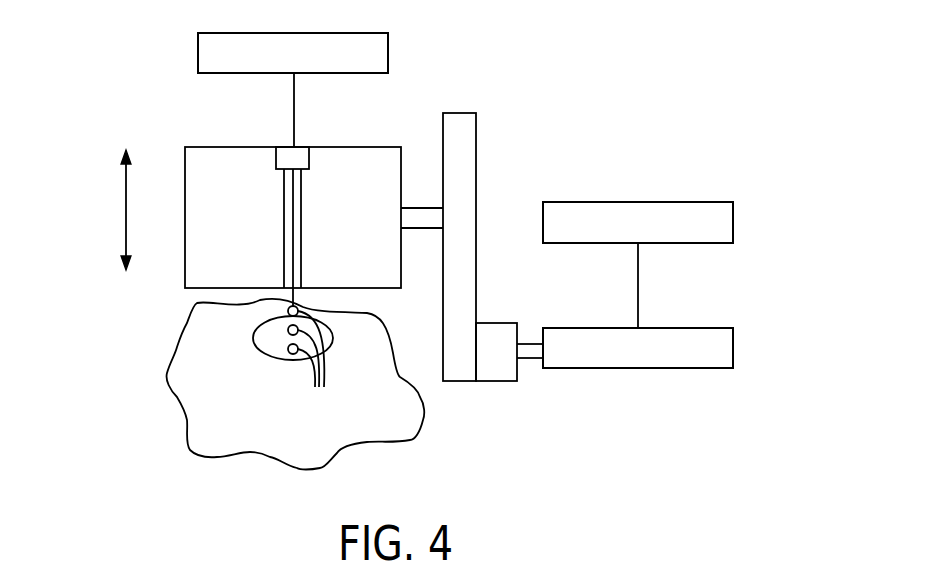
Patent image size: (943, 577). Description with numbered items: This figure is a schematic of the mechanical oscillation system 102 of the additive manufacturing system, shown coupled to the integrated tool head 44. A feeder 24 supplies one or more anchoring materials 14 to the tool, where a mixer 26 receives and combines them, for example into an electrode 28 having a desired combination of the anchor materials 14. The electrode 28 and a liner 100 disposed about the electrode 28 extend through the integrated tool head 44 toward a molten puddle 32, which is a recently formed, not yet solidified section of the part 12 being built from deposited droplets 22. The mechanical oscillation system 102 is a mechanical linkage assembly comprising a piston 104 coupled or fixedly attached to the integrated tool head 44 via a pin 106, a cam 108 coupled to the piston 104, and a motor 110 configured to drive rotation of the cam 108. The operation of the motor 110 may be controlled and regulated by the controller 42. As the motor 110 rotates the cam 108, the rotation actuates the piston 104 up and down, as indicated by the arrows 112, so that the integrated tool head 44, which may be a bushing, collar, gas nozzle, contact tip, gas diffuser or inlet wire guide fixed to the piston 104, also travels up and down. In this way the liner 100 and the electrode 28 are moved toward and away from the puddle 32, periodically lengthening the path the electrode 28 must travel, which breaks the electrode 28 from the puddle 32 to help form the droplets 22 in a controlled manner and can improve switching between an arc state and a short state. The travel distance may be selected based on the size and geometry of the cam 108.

The part 12 is at (188, 462).
The anchoring material 14 is at (294, 112).
The droplets 22 is at (310, 361).
The feeder 24 is at (388, 50).
The mixer 26 is at (275, 158).
The electrode 28 is at (301, 237).
The molten puddle 32 is at (270, 358).
The controller 42 is at (733, 220).
The integrated tool head 44 is at (183, 162).
The liner 100 is at (284, 228).
The mechanical oscillation system 102 is at (600, 117).
The piston 104 is at (476, 160).
The pin 106 is at (422, 208).
The cam 108 is at (495, 381).
The motor 110 is at (733, 350).
The arrows 112 is at (122, 207).